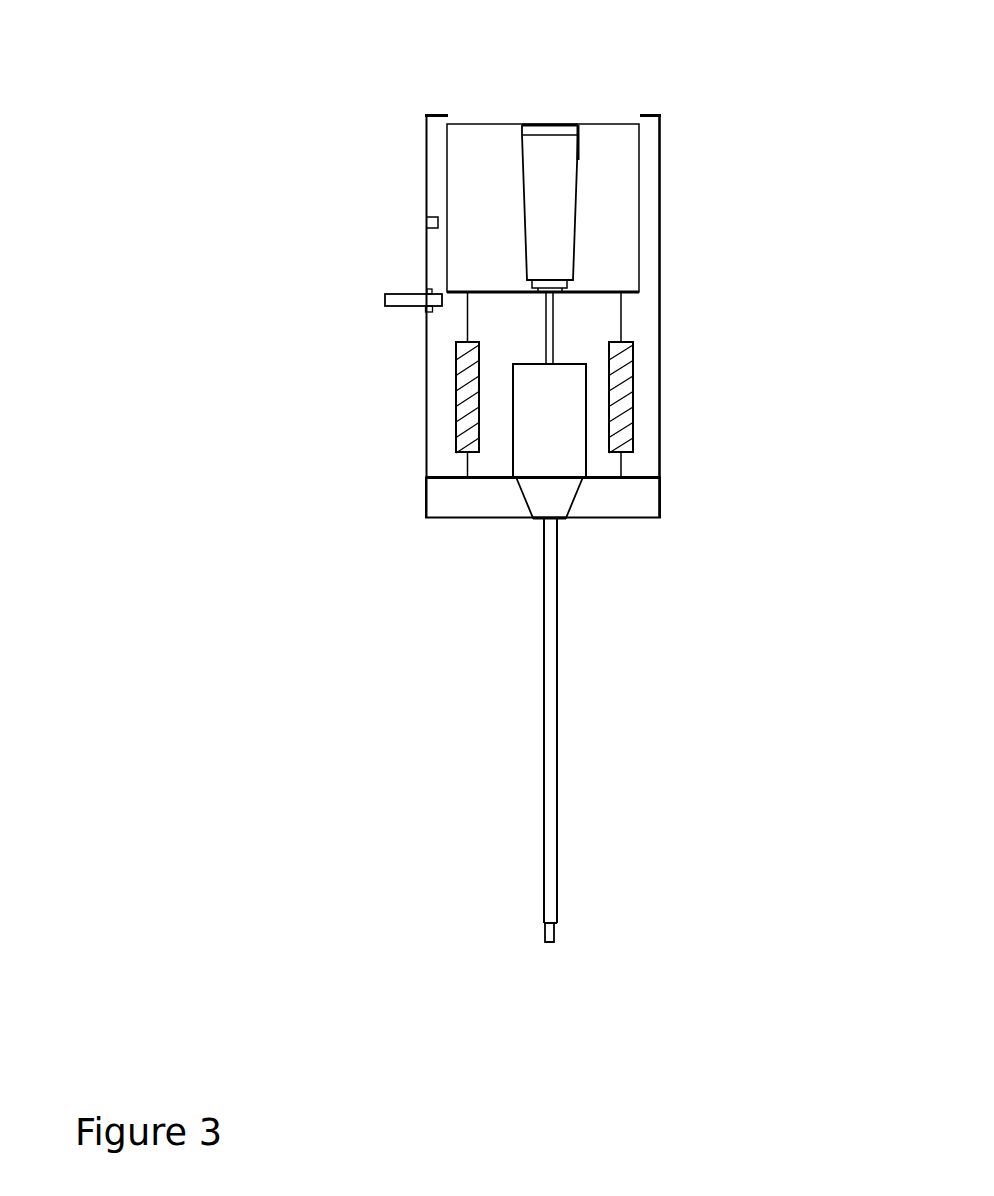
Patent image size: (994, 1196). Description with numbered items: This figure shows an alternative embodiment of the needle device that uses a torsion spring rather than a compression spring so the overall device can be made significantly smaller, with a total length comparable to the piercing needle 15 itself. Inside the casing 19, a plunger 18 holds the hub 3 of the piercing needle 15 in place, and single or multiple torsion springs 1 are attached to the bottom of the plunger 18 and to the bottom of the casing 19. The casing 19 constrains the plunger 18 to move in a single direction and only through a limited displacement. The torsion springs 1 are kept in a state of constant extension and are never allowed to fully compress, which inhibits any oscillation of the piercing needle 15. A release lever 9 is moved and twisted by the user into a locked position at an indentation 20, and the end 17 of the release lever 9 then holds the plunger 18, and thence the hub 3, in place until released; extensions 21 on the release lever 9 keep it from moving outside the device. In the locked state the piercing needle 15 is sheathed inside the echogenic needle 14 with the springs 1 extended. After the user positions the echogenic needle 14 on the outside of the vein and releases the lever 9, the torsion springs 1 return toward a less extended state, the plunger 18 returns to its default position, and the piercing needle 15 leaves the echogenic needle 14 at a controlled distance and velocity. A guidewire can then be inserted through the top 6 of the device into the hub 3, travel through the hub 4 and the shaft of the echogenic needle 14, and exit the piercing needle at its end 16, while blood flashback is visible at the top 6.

The torsion spring 1 is at (432, 381).
The hub of the piercing needle 3 is at (591, 195).
The hub of the echogenic needle 4 is at (590, 464).
The top of the device 6 is at (541, 100).
The release lever 9 is at (360, 304).
The echogenic needle 14 is at (591, 678).
The piercing needle 15 is at (577, 934).
The end of the piercing needle 16 is at (558, 963).
The end of release lever 17 is at (440, 288).
The plunger 18 is at (645, 270).
The casing 19 is at (645, 100).
The indentation 20 is at (420, 226).
The extensions 21 is at (433, 288).